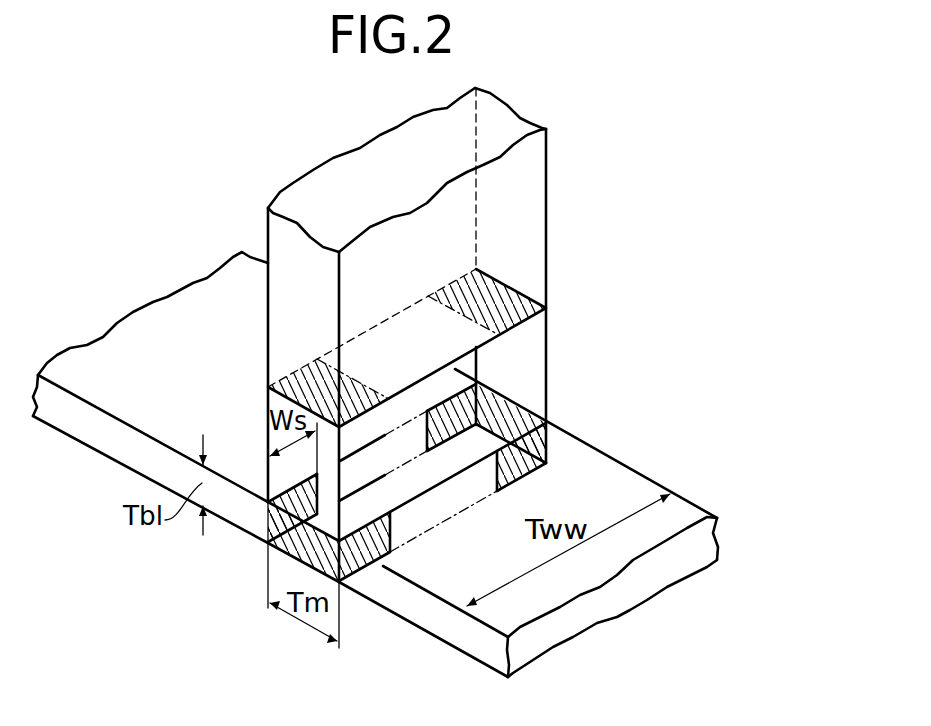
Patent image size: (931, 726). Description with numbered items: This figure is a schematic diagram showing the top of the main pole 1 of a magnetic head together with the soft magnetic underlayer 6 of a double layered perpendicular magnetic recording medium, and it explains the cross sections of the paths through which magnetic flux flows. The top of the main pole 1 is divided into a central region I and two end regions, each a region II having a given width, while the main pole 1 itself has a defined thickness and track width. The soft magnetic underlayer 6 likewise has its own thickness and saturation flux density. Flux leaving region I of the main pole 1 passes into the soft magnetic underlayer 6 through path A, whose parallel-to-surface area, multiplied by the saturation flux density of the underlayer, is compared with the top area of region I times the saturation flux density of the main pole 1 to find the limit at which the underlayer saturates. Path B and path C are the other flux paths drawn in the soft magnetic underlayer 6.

The main pole 1 is at (533, 178).
The soft magnetic underlayer 6 is at (618, 480).
The region I is at (392, 333).
The region II is at (505, 298).
The path A is at (473, 563).
The path B is at (262, 540).
The path C is at (357, 556).